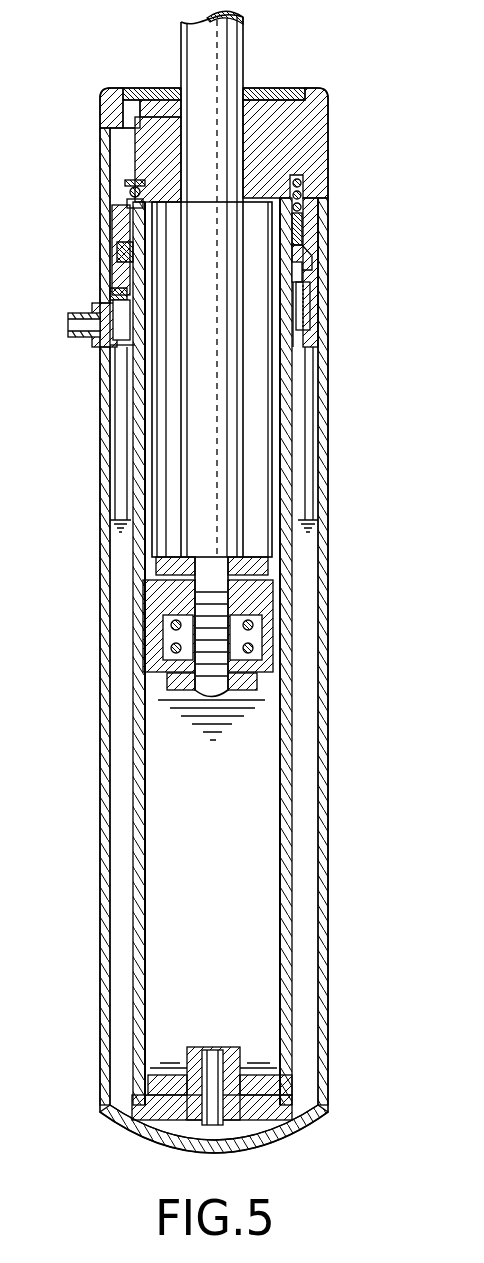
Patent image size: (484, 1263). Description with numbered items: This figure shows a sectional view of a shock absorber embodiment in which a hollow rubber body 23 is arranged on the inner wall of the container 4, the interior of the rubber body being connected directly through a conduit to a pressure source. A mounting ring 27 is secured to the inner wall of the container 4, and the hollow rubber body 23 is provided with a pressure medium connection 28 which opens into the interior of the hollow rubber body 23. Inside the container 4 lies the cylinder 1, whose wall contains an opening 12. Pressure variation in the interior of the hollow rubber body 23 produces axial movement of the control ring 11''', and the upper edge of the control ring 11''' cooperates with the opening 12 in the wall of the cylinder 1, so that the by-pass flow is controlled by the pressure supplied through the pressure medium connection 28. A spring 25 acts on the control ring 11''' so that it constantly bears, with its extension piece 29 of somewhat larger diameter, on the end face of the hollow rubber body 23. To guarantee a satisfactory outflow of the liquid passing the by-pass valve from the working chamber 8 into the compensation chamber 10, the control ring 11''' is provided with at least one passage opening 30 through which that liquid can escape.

The cylinder 1 is at (288, 422).
The container 4 is at (100, 470).
The working chamber 8 is at (268, 503).
The compensation chamber 10 is at (303, 738).
The opening 12 is at (130, 198).
The hollow rubber body 23 is at (113, 293).
The spring 25 is at (302, 187).
The mounting ring 27 is at (110, 368).
The pressure medium connection 28 is at (70, 337).
The extension piece 29 is at (305, 273).
The passage opening 30 is at (118, 249).
The control ring 11''' is at (348, 241).